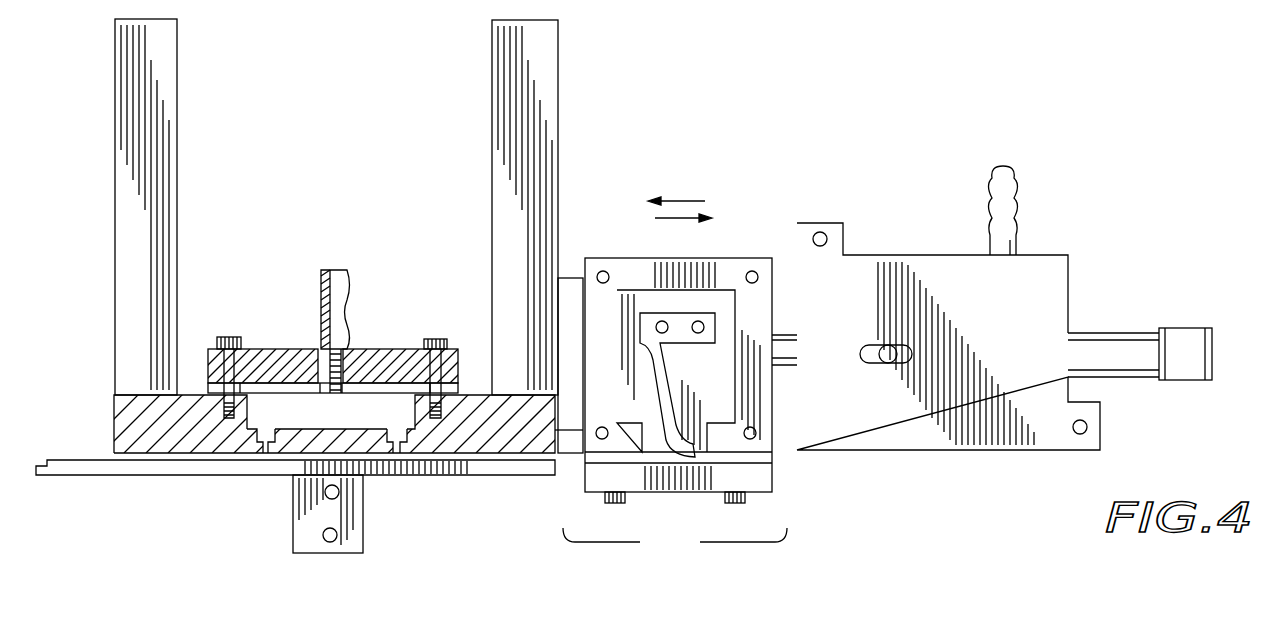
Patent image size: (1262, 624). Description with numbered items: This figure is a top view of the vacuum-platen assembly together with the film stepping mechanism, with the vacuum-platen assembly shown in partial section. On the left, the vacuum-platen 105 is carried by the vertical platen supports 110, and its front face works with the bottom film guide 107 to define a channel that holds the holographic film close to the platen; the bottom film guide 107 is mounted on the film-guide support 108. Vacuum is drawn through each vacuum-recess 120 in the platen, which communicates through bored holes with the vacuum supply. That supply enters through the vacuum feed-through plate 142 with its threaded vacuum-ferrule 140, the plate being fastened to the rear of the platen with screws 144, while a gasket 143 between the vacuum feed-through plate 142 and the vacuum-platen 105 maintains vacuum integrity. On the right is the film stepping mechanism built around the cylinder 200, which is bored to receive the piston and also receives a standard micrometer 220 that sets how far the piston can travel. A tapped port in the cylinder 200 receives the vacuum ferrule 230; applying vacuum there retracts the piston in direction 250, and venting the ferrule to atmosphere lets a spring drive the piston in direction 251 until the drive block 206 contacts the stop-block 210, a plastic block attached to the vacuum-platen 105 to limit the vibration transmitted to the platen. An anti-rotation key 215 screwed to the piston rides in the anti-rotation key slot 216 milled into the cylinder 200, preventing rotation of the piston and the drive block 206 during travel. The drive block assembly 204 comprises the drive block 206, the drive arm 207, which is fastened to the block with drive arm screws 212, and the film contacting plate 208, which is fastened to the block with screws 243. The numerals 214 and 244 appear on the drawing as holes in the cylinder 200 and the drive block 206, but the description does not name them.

The vacuum-platen 105 is at (122, 405).
The bottom film guide 107 is at (175, 468).
The film-guide support 108 is at (310, 527).
The vertical platen supports 110 is at (168, 80).
The vacuum-recess 120 is at (262, 455).
The vacuum-ferrule 140 is at (348, 332).
The vacuum feed-through plate 142 is at (280, 357).
The gasket 143 is at (382, 392).
The screws 144 is at (230, 338).
The cylinder 200 is at (992, 310).
The drive block assembly 204 is at (675, 540).
The drive block 206 is at (673, 373).
The drive arm 207 is at (677, 373).
The film contacting plate 208 is at (673, 481).
The stop-block 210 is at (570, 290).
The drive arm screws 212 is at (700, 320).
The housing mounting holes 214 is at (819, 232).
The anti-rotation key 215 is at (886, 347).
The anti-rotation key slot 216 is at (876, 362).
The micrometer 220 is at (1157, 308).
The vacuum ferrule 230 is at (1007, 173).
The screws 243 is at (612, 500).
The mounting holes 244 is at (597, 436).
The direction 250 is at (680, 222).
The direction 251 is at (693, 167).